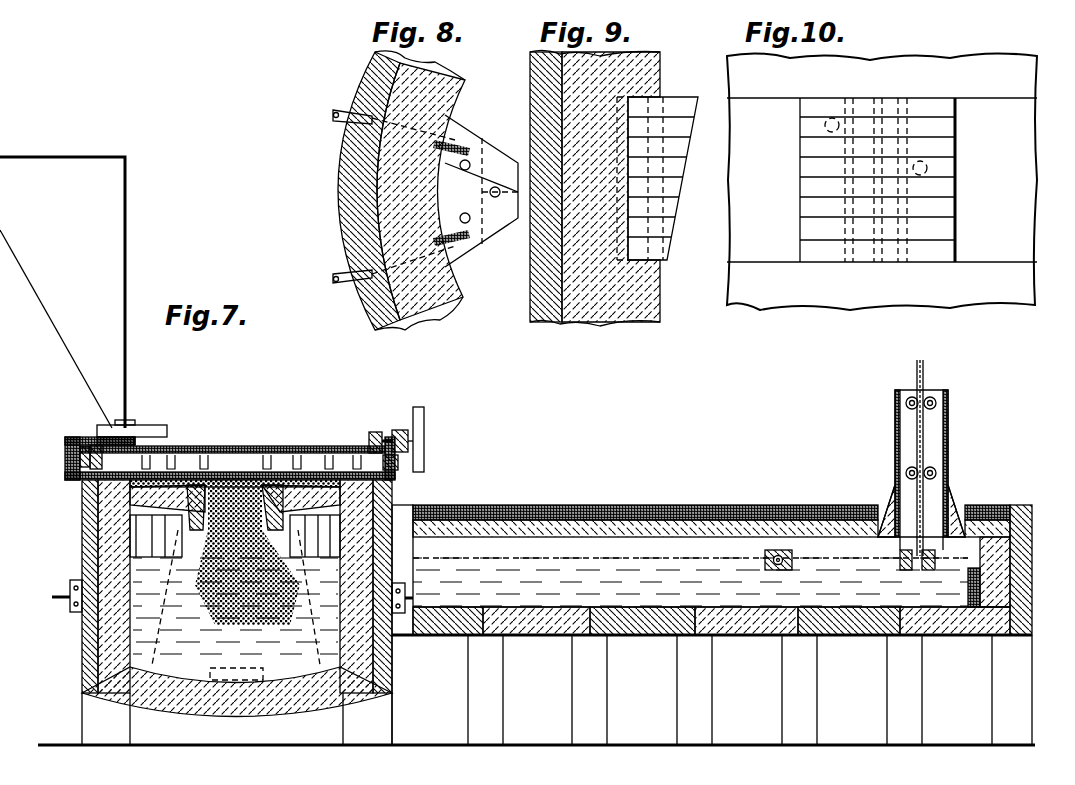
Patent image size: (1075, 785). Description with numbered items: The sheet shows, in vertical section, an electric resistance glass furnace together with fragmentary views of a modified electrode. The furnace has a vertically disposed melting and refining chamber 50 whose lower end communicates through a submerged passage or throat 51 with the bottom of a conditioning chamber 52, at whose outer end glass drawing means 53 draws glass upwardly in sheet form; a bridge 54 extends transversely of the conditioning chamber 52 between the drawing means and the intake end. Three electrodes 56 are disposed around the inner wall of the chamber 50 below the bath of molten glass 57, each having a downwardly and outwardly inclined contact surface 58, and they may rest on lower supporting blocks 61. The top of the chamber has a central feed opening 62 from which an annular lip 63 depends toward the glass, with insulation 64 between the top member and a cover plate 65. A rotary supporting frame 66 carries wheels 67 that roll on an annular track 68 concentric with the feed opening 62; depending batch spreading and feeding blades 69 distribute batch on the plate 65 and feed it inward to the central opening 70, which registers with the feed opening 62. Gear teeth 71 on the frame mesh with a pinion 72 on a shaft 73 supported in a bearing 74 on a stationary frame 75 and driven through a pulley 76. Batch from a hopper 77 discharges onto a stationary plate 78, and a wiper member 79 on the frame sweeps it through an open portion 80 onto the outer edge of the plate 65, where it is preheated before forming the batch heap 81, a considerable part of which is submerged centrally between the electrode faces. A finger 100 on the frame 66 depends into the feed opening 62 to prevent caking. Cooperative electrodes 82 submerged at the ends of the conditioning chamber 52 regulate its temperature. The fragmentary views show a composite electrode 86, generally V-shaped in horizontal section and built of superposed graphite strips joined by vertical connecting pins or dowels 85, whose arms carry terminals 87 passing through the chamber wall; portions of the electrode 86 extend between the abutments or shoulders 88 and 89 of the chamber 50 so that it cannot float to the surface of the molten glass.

In FIG. 7, the melting and refining chamber 50 is at (110, 536).
In FIG. 8, the melting and refining chamber 50 is at (462, 300).
In FIG. 9, the melting and refining chamber 50 is at (660, 322).
In FIG. 7, the submerged passage or throat 51 is at (260, 716).
In FIG. 7, the conditioning chamber 52 is at (592, 537).
In FIG. 7, the glass drawing means 53 is at (930, 540).
In FIG. 7, the bridge 54 is at (767, 550).
In FIG. 7, the electrodes 56 is at (68, 582).
In FIG. 7, the bath of molten glass 57 is at (82, 560).
In FIG. 7, the contact surface 58 is at (80, 634).
In FIG. 7, the lower supporting blocks 61 is at (80, 678).
In FIG. 7, the feed opening 62 is at (248, 448).
In FIG. 7, the annular lip 63 is at (280, 528).
In FIG. 7, the insulation 64 is at (95, 500).
In FIG. 7, the cover plate 65 is at (82, 480).
In FIG. 7, the rotary supporting frame 66 is at (236, 448).
In FIG. 7, the wheels 67 is at (70, 450).
In FIG. 7, the annular track 68 is at (68, 469).
In FIG. 7, the batch spreading and feeding blades 69 is at (188, 448).
In FIG. 7, the central opening 70 is at (264, 448).
In FIG. 7, the gear teeth 71 is at (95, 444).
In FIG. 7, the pinion 72 is at (373, 432).
In FIG. 7, the shaft 73 is at (388, 438).
In FIG. 7, the bearing 74 is at (402, 430).
In FIG. 7, the stationary frame 75 is at (399, 462).
In FIG. 7, the pulley 76 is at (425, 424).
In FIG. 7, the hopper 77 is at (126, 353).
In FIG. 7, the stationary plate 78 is at (78, 447).
In FIG. 7, the wiper member 79 is at (135, 425).
In FIG. 7, the open portion 80 is at (115, 437).
In FIG. 7, the batch heap 81 is at (200, 548).
In FIG. 7, the cooperative electrodes 82 is at (972, 606).
In FIG. 8, the connecting pins or dowels 85 is at (465, 213).
In FIG. 10, the connecting pins or dowels 85 is at (905, 210).
In FIG. 8, the composite electrode 86 is at (497, 244).
In FIG. 9, the composite electrode 86 is at (678, 210).
In FIG. 10, the composite electrode 86 is at (957, 151).
In FIG. 8, the terminals 87 is at (340, 112).
In FIG. 10, the terminals 87 is at (825, 125).
In FIG. 9, the upper abutment or shoulder 88 is at (652, 97).
In FIG. 10, the upper abutment or shoulder 88 is at (963, 98).
In FIG. 9, the lower abutment or shoulder 89 is at (662, 262).
In FIG. 10, the lower abutment or shoulder 89 is at (970, 262).
In FIG. 7, the finger 100 is at (225, 470).